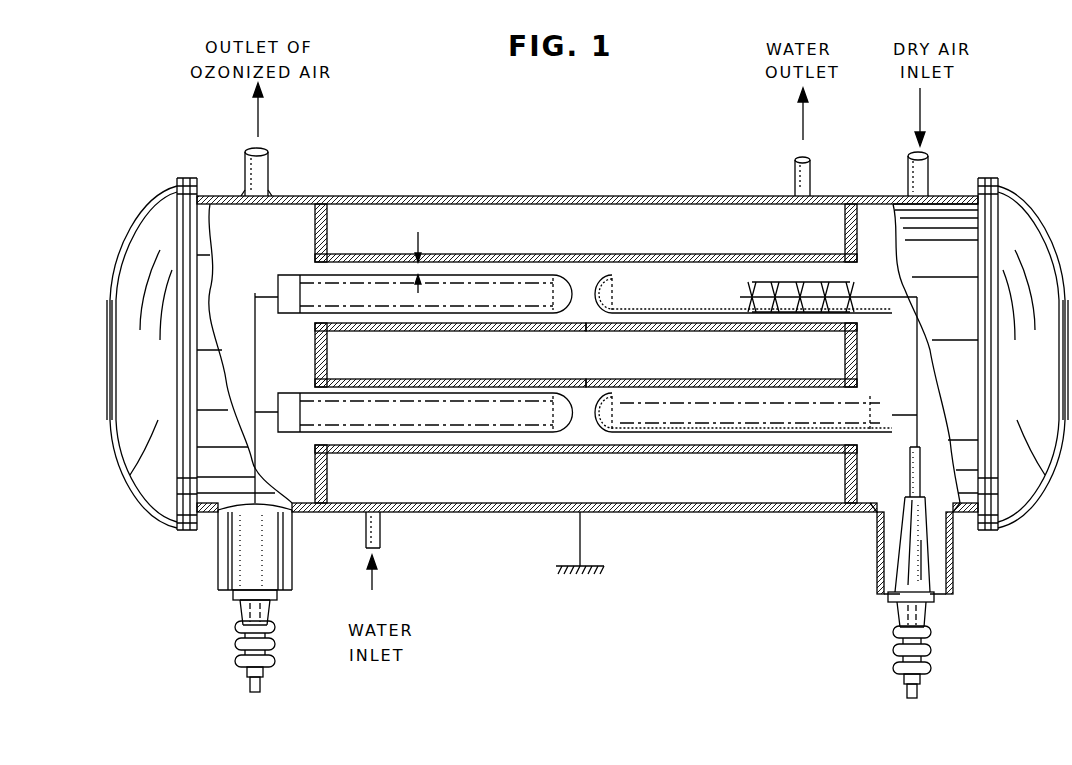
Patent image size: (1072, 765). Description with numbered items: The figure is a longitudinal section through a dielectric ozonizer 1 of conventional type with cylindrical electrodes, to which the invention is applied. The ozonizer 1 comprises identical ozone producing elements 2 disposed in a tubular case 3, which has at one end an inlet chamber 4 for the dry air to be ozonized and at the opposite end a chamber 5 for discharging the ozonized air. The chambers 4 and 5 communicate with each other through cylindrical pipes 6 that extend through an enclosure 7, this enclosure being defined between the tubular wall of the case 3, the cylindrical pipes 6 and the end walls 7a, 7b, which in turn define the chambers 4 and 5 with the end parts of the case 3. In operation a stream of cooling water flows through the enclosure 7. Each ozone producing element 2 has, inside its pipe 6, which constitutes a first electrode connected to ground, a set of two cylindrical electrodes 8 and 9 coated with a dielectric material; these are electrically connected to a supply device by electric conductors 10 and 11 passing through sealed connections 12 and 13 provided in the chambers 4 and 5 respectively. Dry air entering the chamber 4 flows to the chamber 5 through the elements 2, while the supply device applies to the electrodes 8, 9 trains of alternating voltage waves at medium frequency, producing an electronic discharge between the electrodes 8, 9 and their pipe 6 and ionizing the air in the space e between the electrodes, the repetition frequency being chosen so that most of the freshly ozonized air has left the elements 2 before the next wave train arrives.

The dielectric ozonizer 1 is at (575, 190).
The ozone producing element 2 is at (680, 247).
The tubular case 3 is at (517, 510).
The inlet chamber 4 is at (891, 372).
The chamber for discharging ozonized air 5 is at (274, 398).
The cylindrical pipe 6 is at (733, 260).
The enclosure 7 is at (500, 215).
The end wall 7a is at (800, 366).
The end wall 7b is at (327, 352).
The cylindrical electrode 8 is at (535, 290).
The cylindrical electrode 9 is at (642, 288).
The electric conductor 10 is at (927, 384).
The electric conductor 11 is at (240, 332).
The sealed connection 12 is at (934, 622).
The sealed connection 13 is at (240, 616).
The space between the electrodes e is at (425, 259).